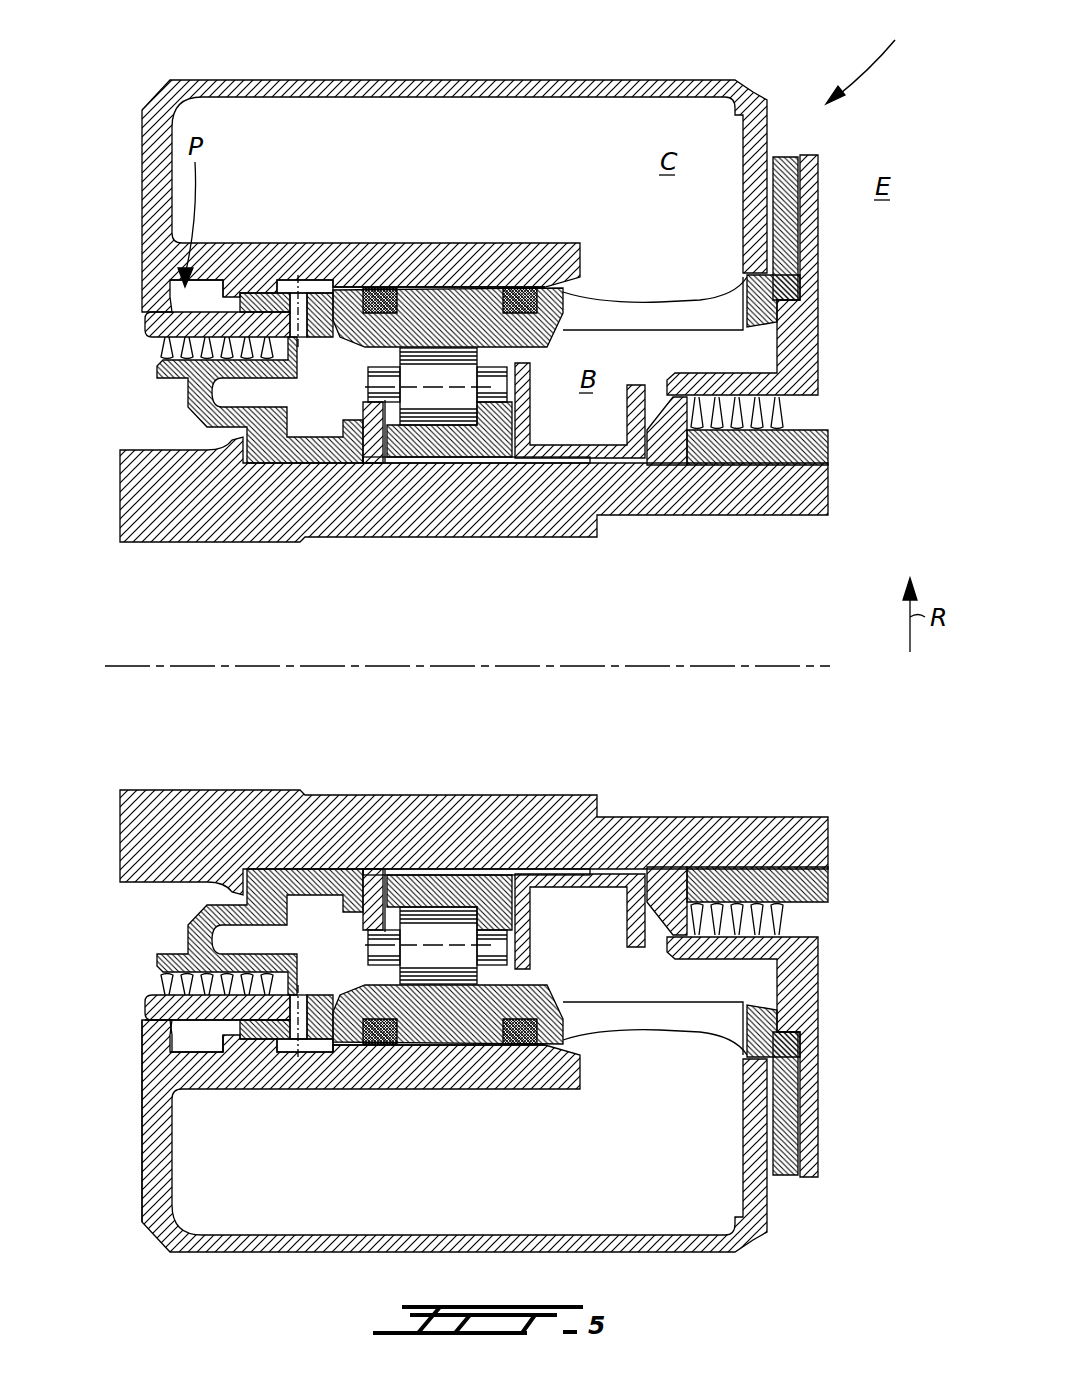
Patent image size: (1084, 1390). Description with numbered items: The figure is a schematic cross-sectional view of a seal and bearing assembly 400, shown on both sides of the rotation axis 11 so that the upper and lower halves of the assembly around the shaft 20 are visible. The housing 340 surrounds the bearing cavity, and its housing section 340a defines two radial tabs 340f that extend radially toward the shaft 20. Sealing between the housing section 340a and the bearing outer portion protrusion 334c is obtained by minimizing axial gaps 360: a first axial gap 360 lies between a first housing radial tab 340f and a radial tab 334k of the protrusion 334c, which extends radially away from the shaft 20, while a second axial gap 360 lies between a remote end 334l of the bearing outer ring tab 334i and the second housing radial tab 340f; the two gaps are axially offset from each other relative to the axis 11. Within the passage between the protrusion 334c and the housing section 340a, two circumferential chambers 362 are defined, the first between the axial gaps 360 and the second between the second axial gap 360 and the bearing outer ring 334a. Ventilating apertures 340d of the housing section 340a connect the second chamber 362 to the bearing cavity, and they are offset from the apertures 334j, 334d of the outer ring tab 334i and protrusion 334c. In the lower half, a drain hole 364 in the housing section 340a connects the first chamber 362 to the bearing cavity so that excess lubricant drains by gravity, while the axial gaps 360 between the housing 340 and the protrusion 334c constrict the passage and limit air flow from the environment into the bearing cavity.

The housing 340 is at (664, 80).
The seal and bearing assembly 400 is at (862, 55).
The axial gaps 360 is at (233, 262).
The bearing outer portion protrusion 334c is at (248, 300).
The bearing outer ring tab 334i is at (290, 312).
The apertures of the bearing outer ring tab 334j is at (335, 300).
The bearing outer ring 334a is at (453, 308).
The housing section 340a is at (488, 243).
The radial tab of the bearing protrusion 334k is at (148, 322).
The apertures of the protrusion 334d is at (330, 330).
The shaft 20 is at (630, 517).
The rotation axis 11 is at (775, 660).
The radial tabs of the housing section 340f is at (150, 1028).
The remote end of the bearing outer ring tab 334l is at (200, 1062).
The drain hole 364 is at (238, 1028).
The chambers 362 is at (205, 1052).
The ventilating apertures 340d is at (273, 1067).